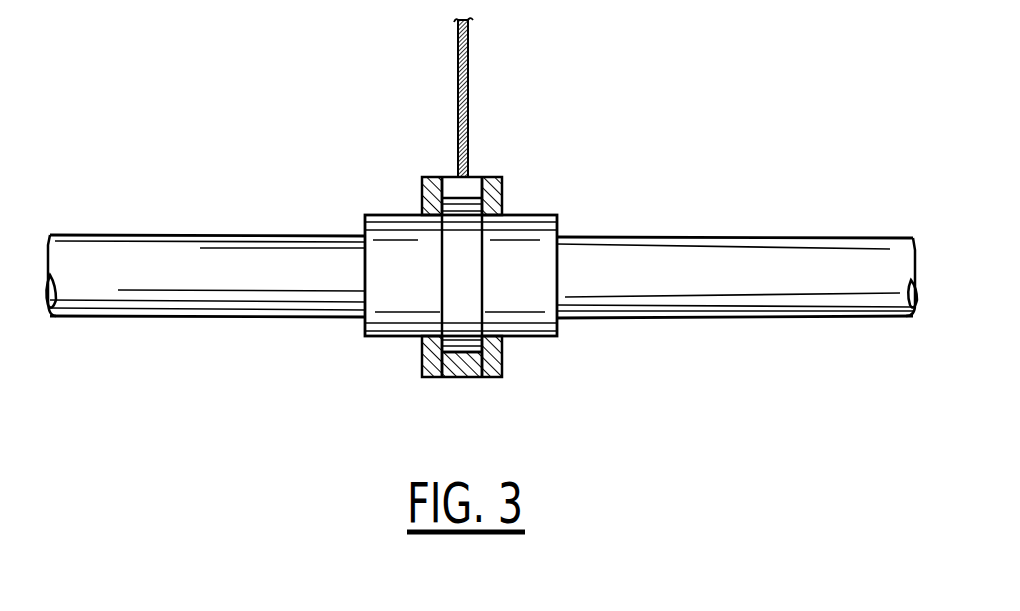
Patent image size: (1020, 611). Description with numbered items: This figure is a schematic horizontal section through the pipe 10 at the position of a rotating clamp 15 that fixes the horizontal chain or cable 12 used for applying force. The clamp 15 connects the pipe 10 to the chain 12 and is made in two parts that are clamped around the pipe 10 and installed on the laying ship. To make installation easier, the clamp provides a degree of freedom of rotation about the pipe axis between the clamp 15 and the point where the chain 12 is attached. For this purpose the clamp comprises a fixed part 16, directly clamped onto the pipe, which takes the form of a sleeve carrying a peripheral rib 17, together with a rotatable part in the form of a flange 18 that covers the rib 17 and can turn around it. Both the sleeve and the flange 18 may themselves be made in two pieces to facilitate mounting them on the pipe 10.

The pipe 10 is at (777, 272).
The chain 12 is at (468, 78).
The clamp 15 is at (533, 198).
The fixed part 16 is at (523, 296).
The peripheral rib 17 is at (457, 297).
The flange 18 is at (490, 176).